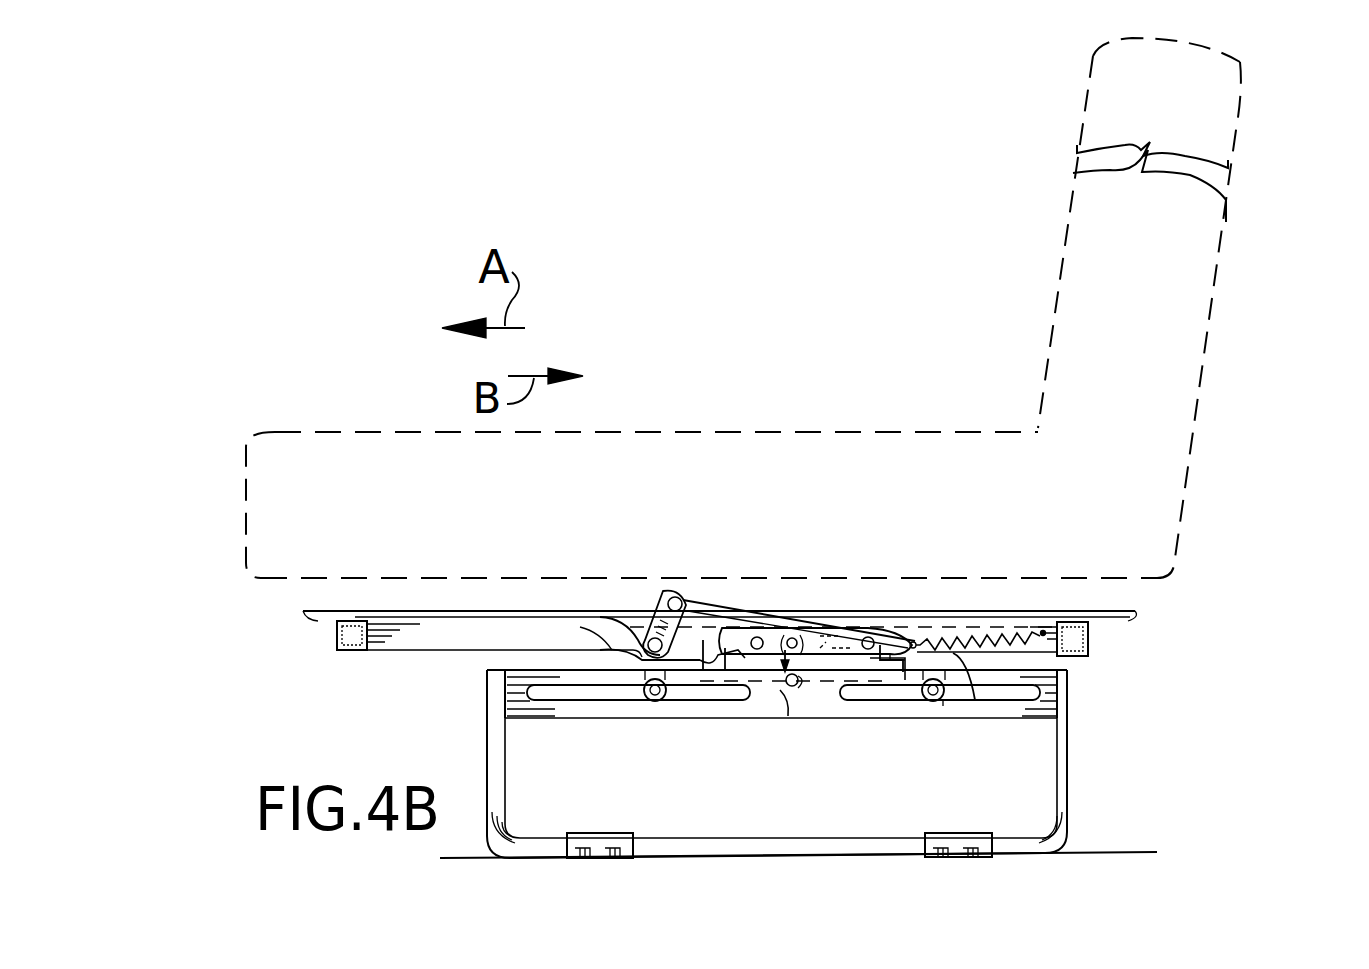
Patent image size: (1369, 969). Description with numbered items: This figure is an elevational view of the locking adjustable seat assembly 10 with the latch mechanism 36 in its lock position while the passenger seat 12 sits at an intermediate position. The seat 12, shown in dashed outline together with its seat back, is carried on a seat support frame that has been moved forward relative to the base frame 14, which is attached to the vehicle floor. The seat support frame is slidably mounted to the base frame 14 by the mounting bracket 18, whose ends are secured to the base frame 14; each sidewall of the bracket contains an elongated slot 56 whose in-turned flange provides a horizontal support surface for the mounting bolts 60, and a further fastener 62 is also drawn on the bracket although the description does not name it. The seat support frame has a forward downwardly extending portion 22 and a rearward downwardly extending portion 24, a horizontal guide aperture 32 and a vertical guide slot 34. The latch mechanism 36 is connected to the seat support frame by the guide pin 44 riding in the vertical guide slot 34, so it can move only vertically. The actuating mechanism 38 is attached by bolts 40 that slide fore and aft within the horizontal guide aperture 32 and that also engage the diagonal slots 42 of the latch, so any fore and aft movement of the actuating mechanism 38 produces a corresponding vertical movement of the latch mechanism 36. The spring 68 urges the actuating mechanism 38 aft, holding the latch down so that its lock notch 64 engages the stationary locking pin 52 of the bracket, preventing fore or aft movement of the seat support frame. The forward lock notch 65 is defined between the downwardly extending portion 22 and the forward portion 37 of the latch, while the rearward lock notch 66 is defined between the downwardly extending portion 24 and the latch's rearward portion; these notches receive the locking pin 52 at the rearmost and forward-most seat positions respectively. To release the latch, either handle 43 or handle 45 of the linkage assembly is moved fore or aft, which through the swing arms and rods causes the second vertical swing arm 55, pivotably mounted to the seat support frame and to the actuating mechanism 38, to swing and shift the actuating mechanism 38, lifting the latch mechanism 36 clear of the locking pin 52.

The locking adjustable seat assembly 10 is at (1253, 453).
The passenger seat 12 is at (709, 428).
The base frame 14 is at (1072, 789).
The mounting bracket 18 is at (848, 712).
The downwardly extending portion 22 is at (660, 677).
The downwardly extending portion 24 is at (953, 653).
The horizontal guide aperture 32 is at (737, 638).
The vertical guide slot 34 is at (834, 634).
The latch mechanism 36 is at (730, 643).
The forward portion 37 is at (640, 648).
The actuating mechanism 38 is at (700, 597).
The bolts 40 is at (870, 636).
The diagonal slots 42 is at (718, 655).
The handle 43 is at (316, 620).
The guide pin 44 is at (797, 642).
The handle 45 is at (1122, 614).
The locking pin 52 is at (787, 692).
The second vertical swing arm 55 is at (655, 598).
The elongated slot 56 is at (573, 695).
The mounting bolts 60 is at (680, 702).
The roller 62 is at (940, 705).
The lock notch 64 is at (813, 688).
The forward lock notch 65 is at (700, 660).
The rearward lock notch 66 is at (890, 656).
The spring 68 is at (982, 640).